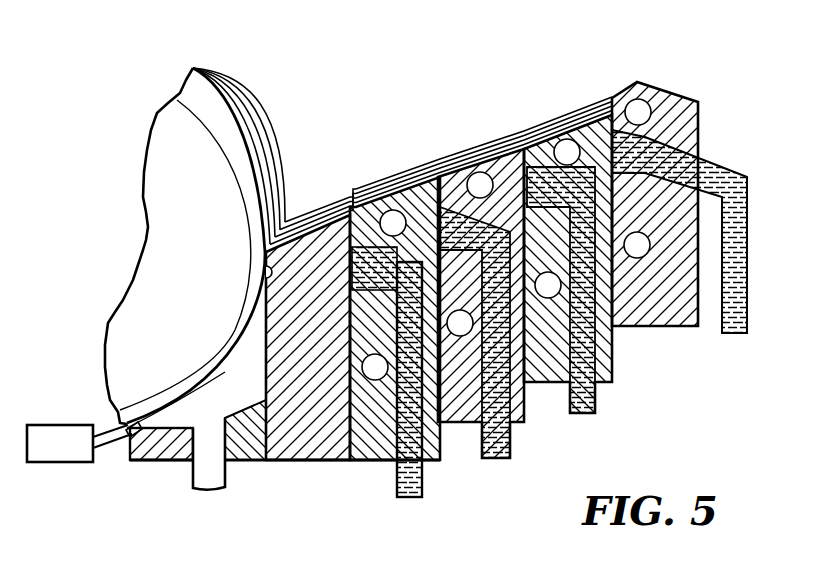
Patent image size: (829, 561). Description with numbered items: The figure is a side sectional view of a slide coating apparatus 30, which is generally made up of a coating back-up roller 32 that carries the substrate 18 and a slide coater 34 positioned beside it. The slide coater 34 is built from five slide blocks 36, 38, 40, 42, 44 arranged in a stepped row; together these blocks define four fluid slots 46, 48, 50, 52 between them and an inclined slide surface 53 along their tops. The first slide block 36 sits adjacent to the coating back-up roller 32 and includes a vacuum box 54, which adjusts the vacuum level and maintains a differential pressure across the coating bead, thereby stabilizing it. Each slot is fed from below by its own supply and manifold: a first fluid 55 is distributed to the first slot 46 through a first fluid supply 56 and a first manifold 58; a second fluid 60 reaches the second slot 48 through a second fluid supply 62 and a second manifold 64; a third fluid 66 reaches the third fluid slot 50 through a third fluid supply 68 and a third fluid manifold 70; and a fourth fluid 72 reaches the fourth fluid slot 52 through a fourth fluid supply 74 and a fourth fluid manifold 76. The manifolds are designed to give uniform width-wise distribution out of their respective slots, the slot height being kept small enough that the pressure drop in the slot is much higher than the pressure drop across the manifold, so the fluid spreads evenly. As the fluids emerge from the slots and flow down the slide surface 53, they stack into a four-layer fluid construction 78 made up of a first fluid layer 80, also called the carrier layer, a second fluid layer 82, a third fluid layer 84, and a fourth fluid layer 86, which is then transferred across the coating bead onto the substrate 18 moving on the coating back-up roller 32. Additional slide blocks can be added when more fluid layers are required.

The substrate 18 is at (190, 387).
The slide coating apparatus 30 is at (316, 66).
The coating back-up roller 32 is at (168, 140).
The slide coater 34 is at (425, 104).
The first slide block 36 is at (298, 445).
The second slide block 38 is at (367, 445).
The third slide block 40 is at (463, 410).
The fourth slide block 42 is at (543, 373).
The fifth slide block 44 is at (663, 312).
The first fluid slot 46 is at (345, 228).
The second fluid slot 48 is at (430, 192).
The third fluid slot 50 is at (529, 165).
The fourth fluid slot 52 is at (613, 96).
The slide surface 53 is at (301, 212).
The vacuum box 54 is at (175, 442).
The first fluid 55 is at (403, 237).
The first fluid supply 56 is at (407, 488).
The first manifold 58 is at (403, 237).
The second fluid 60 is at (446, 192).
The second fluid supply 62 is at (498, 450).
The second manifold 64 is at (486, 168).
The third fluid 66 is at (590, 160).
The third fluid supply 68 is at (583, 410).
The third fluid manifold 70 is at (562, 187).
The fourth fluid 72 is at (645, 137).
The fourth fluid supply 74 is at (733, 320).
The fourth fluid manifold 76 is at (650, 170).
The four-layer fluid construction 78 is at (299, 230).
The first fluid layer 80 is at (300, 228).
The second fluid layer 82 is at (387, 212).
The third fluid layer 84 is at (462, 150).
The fourth fluid layer 86 is at (596, 100).